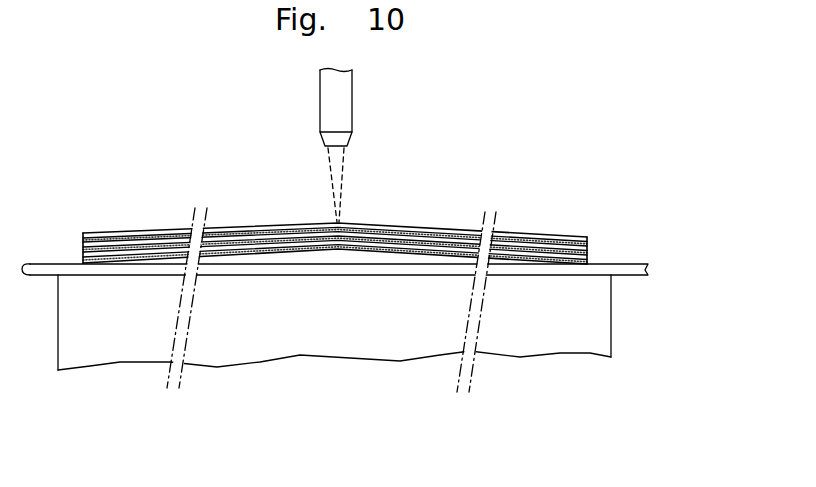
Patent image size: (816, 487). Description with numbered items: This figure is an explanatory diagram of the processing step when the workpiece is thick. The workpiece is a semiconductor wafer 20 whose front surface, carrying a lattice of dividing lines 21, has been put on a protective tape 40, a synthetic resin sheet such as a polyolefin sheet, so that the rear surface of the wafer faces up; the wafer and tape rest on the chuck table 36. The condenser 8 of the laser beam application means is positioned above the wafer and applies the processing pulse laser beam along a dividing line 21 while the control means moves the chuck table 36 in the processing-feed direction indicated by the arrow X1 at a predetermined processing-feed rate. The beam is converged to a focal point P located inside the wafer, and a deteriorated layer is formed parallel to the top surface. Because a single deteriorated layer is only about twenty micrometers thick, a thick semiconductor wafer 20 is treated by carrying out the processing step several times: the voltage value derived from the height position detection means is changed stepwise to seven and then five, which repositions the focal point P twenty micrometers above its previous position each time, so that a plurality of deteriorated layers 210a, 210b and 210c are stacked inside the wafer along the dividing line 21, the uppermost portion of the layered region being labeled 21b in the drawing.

The condenser 8 is at (352, 97).
The semiconductor wafer 20 is at (385, 233).
The dividing line 21 is at (385, 243).
The top layer of laminate 21b is at (273, 224).
The deteriorated layer 210a is at (221, 252).
The deteriorated layer 210b is at (250, 252).
The deteriorated layer 210c is at (166, 236).
The chuck table 36 is at (612, 320).
The protective tape 40 is at (30, 277).
The focal point P is at (340, 235).
The processing-feed direction X1 is at (430, 410).